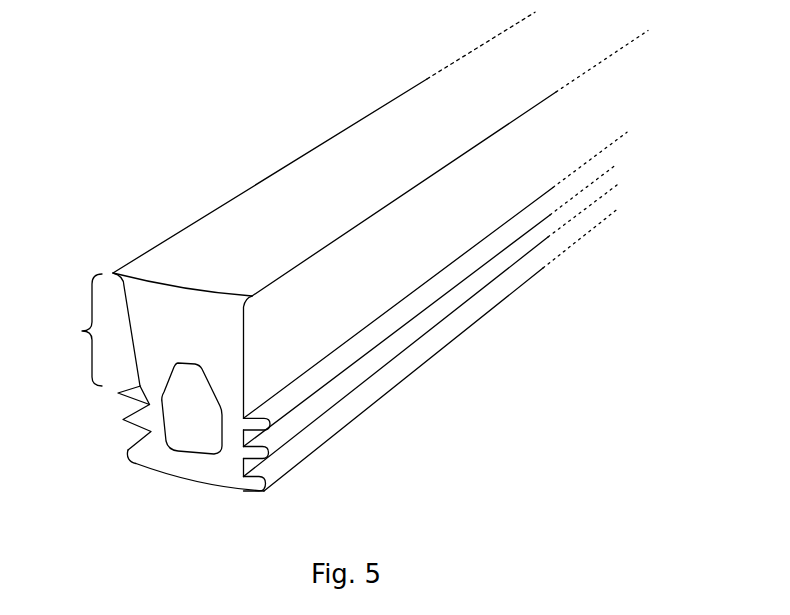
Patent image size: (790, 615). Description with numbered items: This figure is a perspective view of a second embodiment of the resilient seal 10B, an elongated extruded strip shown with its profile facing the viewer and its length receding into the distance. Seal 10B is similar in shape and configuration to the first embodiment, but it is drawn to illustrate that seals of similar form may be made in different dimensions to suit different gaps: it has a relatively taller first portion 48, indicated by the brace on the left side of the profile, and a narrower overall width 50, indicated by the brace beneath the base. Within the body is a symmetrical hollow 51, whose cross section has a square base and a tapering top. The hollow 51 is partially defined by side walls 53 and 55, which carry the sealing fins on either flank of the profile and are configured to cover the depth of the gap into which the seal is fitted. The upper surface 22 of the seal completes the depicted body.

The resilient seal 10B is at (263, 137).
The top wall 22 is at (347, 148).
The first portion 48 is at (70, 330).
The overall width 50 is at (194, 504).
The symmetrical hollow 51 is at (186, 423).
The side wall 53 is at (153, 373).
The side wall 55 is at (227, 385).